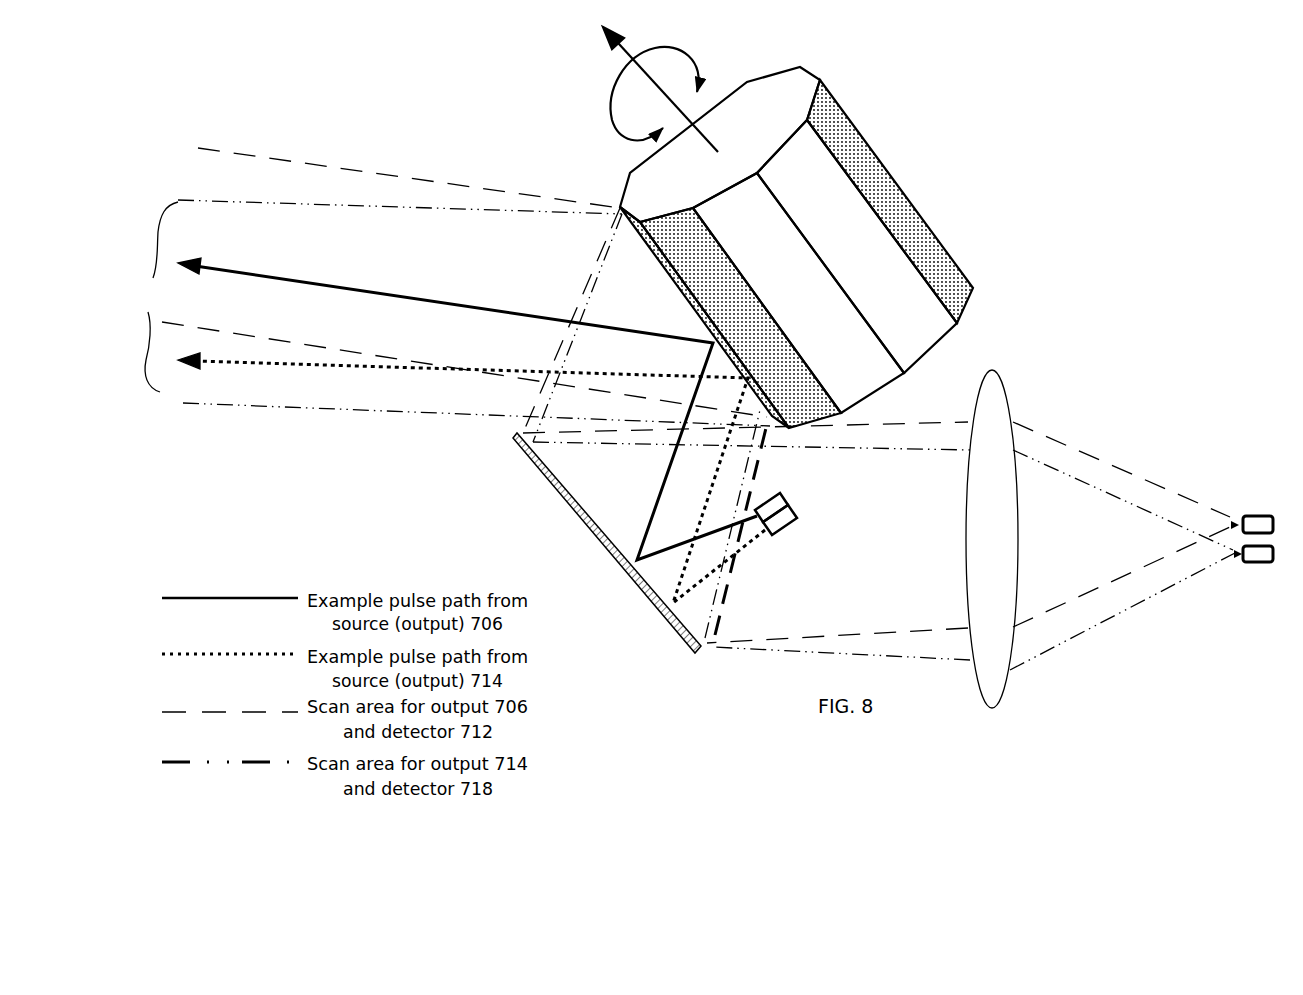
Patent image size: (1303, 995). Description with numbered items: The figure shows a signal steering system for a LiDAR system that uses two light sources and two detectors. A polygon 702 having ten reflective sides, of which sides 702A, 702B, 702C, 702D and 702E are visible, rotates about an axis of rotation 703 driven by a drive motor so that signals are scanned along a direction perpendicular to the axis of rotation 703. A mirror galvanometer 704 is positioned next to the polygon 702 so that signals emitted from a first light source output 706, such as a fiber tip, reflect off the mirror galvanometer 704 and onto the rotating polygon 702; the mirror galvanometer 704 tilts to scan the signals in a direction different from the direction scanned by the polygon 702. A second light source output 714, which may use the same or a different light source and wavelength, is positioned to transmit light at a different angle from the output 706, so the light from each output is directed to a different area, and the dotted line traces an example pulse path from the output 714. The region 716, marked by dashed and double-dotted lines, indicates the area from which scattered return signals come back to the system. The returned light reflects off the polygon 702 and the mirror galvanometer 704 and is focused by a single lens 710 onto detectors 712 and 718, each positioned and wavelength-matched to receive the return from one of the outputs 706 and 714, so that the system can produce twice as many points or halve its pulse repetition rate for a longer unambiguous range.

The polygon 702 is at (803, 247).
The reflective side 702A is at (681, 287).
The reflective side 702B is at (818, 394).
The reflective side 702C is at (878, 364).
The reflective side 702D is at (932, 317).
The reflective side 702E is at (937, 247).
The axis of rotation 703 is at (656, 89).
The mirror galvanometer 704 is at (623, 585).
The light source output 706 is at (783, 502).
The lens 710 is at (1005, 533).
The detector 712 is at (1252, 508).
The light source output 714 is at (795, 530).
The region 716 is at (153, 297).
The detector 718 is at (1253, 572).